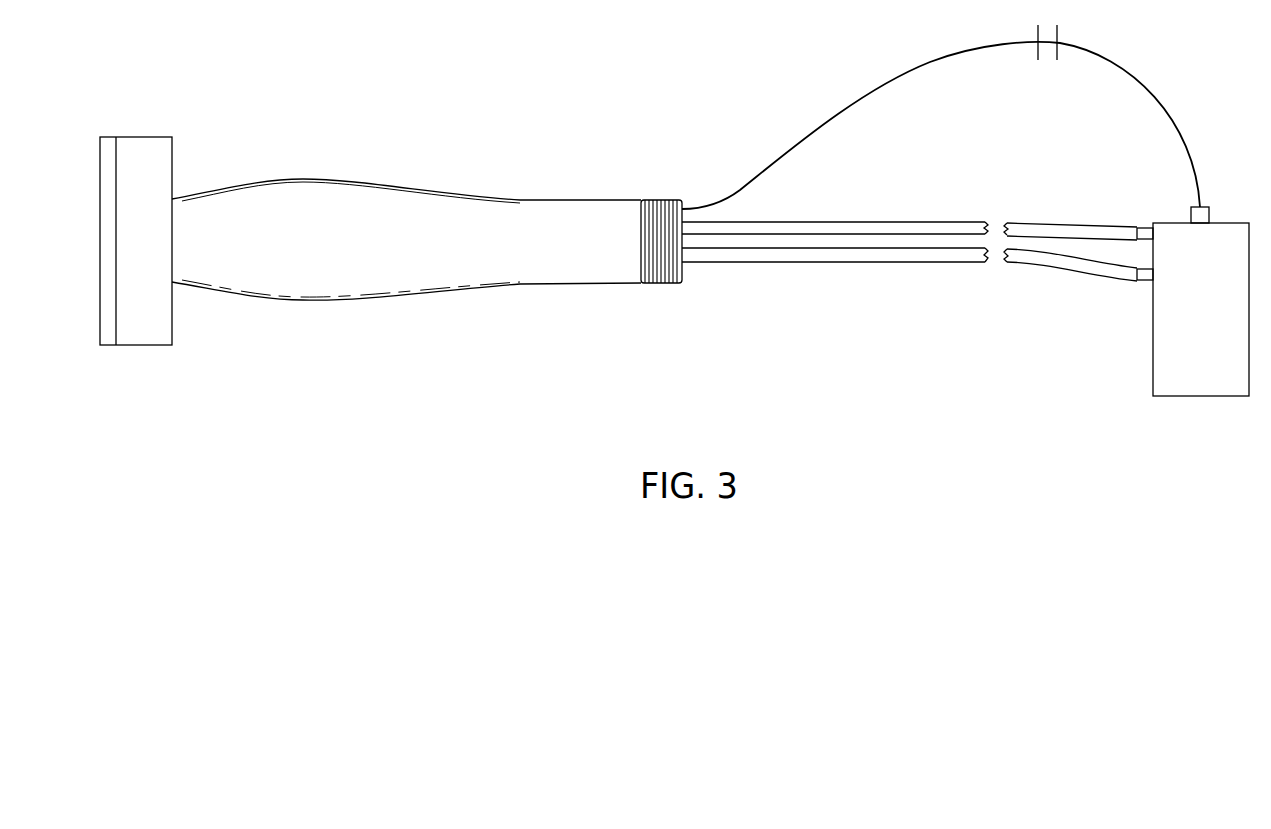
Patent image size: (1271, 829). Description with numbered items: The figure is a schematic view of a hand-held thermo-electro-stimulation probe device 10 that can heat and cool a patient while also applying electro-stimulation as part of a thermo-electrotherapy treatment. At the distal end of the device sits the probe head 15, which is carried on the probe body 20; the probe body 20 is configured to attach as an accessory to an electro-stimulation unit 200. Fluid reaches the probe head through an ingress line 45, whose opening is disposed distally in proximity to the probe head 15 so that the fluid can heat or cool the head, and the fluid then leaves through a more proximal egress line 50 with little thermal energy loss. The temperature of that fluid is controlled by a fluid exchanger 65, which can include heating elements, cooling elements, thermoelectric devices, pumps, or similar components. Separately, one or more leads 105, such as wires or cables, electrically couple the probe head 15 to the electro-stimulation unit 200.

The thermo-electro-stimulation probe device 10 is at (425, 136).
The probe head 15 is at (100, 328).
The probe body 20 is at (417, 270).
The ingress line 45 is at (843, 222).
The egress line 50 is at (868, 262).
The leads 105 is at (862, 105).
The fluid exchanger 65 is at (1201, 301).
The electro-stimulation unit 200 is at (1240, 323).